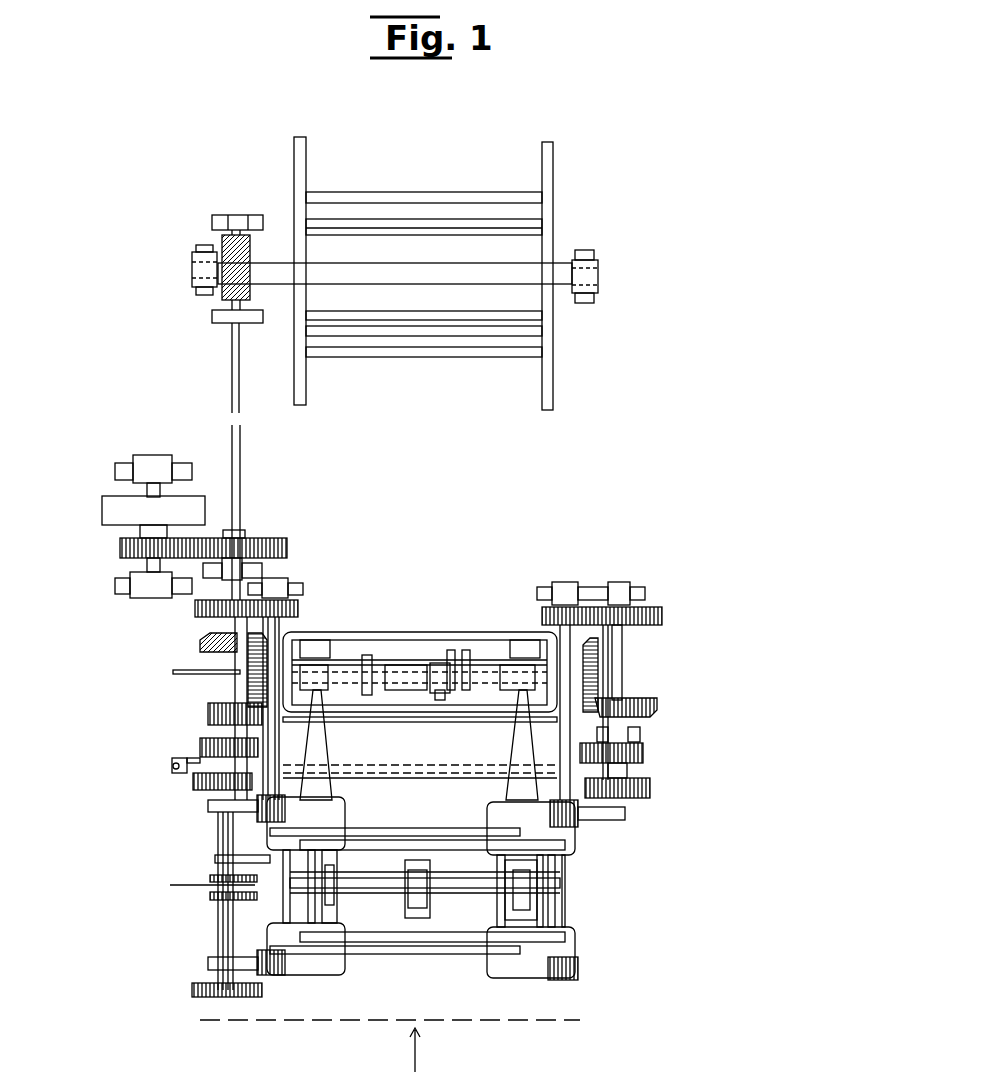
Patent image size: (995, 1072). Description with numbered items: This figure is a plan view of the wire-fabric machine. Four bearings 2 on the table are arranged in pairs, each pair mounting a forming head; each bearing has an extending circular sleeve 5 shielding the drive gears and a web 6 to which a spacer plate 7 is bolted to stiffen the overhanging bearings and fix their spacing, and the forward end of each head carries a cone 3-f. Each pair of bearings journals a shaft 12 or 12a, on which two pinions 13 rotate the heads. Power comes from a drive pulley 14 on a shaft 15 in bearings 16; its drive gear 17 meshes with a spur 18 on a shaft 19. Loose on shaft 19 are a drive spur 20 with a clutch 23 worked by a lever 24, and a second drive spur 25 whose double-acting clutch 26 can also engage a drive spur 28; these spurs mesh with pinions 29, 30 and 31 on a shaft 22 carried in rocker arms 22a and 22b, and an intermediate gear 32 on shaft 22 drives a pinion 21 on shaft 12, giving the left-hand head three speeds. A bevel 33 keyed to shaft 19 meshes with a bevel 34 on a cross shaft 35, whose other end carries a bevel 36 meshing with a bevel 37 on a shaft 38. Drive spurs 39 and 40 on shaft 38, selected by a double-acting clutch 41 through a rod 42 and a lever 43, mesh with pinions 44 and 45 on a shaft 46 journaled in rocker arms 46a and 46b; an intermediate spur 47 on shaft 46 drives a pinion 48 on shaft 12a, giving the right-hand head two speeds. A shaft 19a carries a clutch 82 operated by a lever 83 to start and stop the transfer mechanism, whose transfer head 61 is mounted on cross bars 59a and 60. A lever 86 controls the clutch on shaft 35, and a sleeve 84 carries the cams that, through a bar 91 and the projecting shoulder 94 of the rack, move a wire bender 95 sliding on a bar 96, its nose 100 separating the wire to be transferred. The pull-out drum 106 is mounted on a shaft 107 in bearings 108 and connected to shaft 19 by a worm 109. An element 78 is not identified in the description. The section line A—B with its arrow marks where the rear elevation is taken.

The drum 106 is at (555, 342).
The shaft 107 is at (556, 265).
The bearings 108 is at (190, 288).
The worm 109 is at (222, 250).
The drive pulley 14 is at (102, 512).
The shaft 15 is at (147, 489).
The bearings 16 is at (133, 468).
The drive gear 17 is at (120, 546).
The spur 18 is at (245, 535).
The shaft 19 is at (240, 484).
The shaft 19a is at (225, 940).
The pinion 21 is at (305, 590).
The shaft 22 is at (247, 660).
The rocker arm 22a is at (288, 583).
The rocker arm 22b is at (240, 812).
The shaft 12 is at (270, 640).
The shaft 12a is at (550, 640).
The pinions 13 is at (278, 975).
The drive spur 20 is at (208, 714).
The clutch 23 is at (200, 742).
The lever 24 is at (210, 724).
The second drive spur 25 is at (193, 780).
The clutch 26 is at (215, 786).
The drive spur 28 is at (230, 792).
The pinion 29 is at (318, 716).
The pinion 30 is at (258, 745).
The pinion 31 is at (252, 778).
The intermediate gear 32 is at (195, 610).
The bevel 33 is at (200, 640).
The bevel 34 is at (378, 640).
The cross shaft 35 is at (445, 680).
The bevel 36 is at (598, 650).
The bevel 37 is at (635, 700).
The shaft 38 is at (622, 670).
The drive spur 39 is at (643, 755).
The drive spur 40 is at (650, 788).
The double acting clutch 41 is at (627, 772).
The rod 42 is at (393, 770).
The lever 43 is at (172, 768).
The pinion 44 is at (625, 812).
The pinion 45 is at (580, 815).
The shaft 46 is at (608, 735).
The rocker arm 46a is at (605, 798).
The rocker arm 46b is at (630, 608).
The intermediate spur 47 is at (598, 607).
The pinion 48 is at (550, 612).
The bearings 2 is at (421, 887).
The circular sleeve 5 is at (495, 848).
The web 6 is at (424, 867).
The spacer plate 7 is at (375, 828).
The cross bar 59a is at (405, 878).
The cross bar 60 is at (395, 889).
The transfer head 61 is at (427, 905).
The gear 78 is at (210, 892).
The clutch 82 is at (220, 840).
The lever 83 is at (205, 826).
The sleeve 84 is at (400, 668).
The lever 86 is at (225, 674).
The bar 91 is at (430, 650).
The projecting shoulder 94 is at (440, 695).
The wire bender 95 is at (448, 668).
The bar 96 is at (406, 663).
The nose 100 is at (440, 665).
The cone 3-f is at (325, 750).
The section line A—B A is at (389, 1023).
The section line A— B is at (501, 1042).